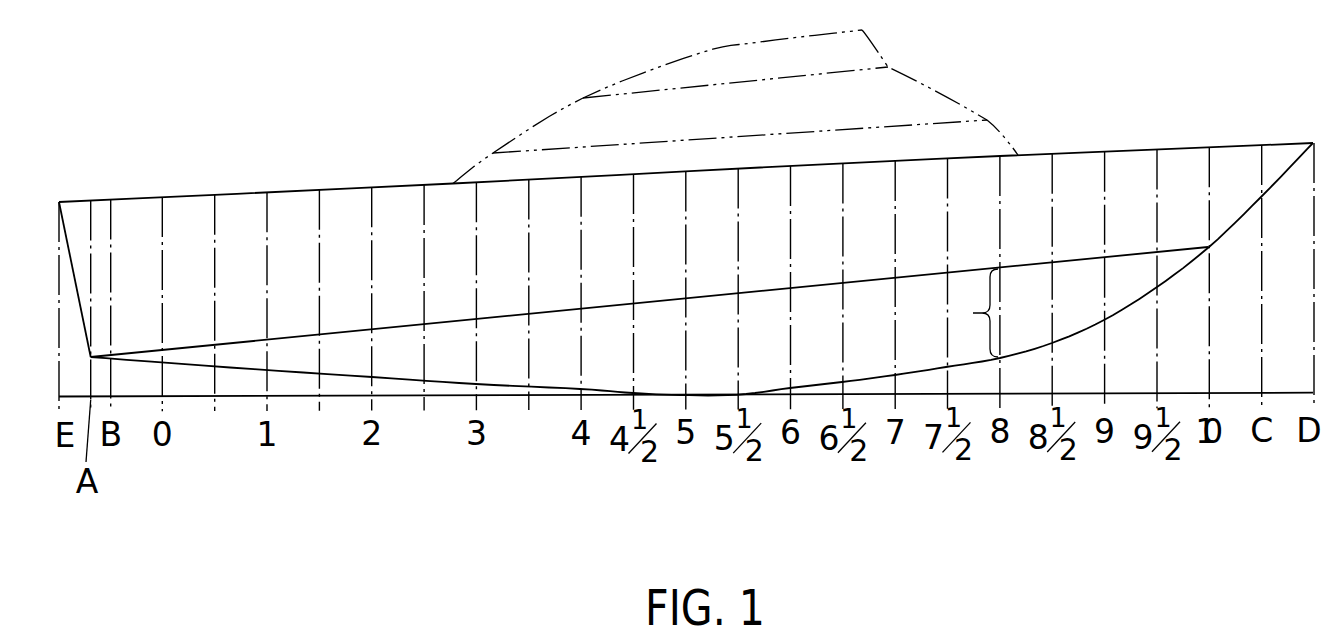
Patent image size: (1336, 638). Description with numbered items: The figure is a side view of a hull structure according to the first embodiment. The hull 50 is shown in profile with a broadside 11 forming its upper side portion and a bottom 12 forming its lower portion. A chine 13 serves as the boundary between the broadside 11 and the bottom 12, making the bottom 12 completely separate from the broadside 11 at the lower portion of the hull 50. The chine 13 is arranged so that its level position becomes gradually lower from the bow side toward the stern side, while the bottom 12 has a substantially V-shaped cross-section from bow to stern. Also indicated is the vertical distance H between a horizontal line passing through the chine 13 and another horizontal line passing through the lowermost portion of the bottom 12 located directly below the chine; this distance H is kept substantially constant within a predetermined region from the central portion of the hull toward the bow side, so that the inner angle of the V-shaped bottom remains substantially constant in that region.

The broadside 11 is at (225, 208).
The hull 50 is at (348, 185).
The bottom 12 is at (418, 368).
The chine 13 is at (313, 336).
The vertical distance H is at (972, 313).